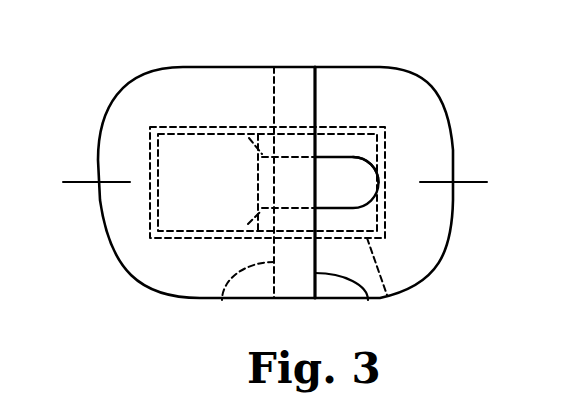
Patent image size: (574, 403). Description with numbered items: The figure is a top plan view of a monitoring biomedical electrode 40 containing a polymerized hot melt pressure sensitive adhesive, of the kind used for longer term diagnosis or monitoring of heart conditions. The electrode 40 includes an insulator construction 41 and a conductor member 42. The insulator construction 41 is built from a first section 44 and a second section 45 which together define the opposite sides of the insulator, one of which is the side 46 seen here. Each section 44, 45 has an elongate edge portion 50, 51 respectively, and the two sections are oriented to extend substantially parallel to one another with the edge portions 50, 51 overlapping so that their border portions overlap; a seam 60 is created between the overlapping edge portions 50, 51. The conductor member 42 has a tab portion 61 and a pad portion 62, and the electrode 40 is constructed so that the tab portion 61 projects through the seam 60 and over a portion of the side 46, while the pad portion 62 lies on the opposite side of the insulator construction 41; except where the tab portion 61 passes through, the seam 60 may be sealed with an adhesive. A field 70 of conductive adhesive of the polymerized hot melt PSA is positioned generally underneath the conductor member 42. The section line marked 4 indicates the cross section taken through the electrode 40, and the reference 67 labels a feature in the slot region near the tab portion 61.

The section line 4- 4 is at (73, 192).
The electrode 40 is at (400, 57).
The insulator construction 41 is at (175, 78).
The conductor member 42 is at (388, 187).
The first section 44 is at (133, 98).
The second section 45 is at (425, 222).
The side 46 is at (423, 265).
The elongate edge portion 50 is at (348, 302).
The elongate edge portion 51 is at (222, 300).
The seam 60 is at (290, 83).
The tab portion 61 is at (362, 167).
The pad portion 62 is at (218, 142).
The slot extension 67 is at (341, 150).
The field of conductive adhesive 70 is at (387, 295).